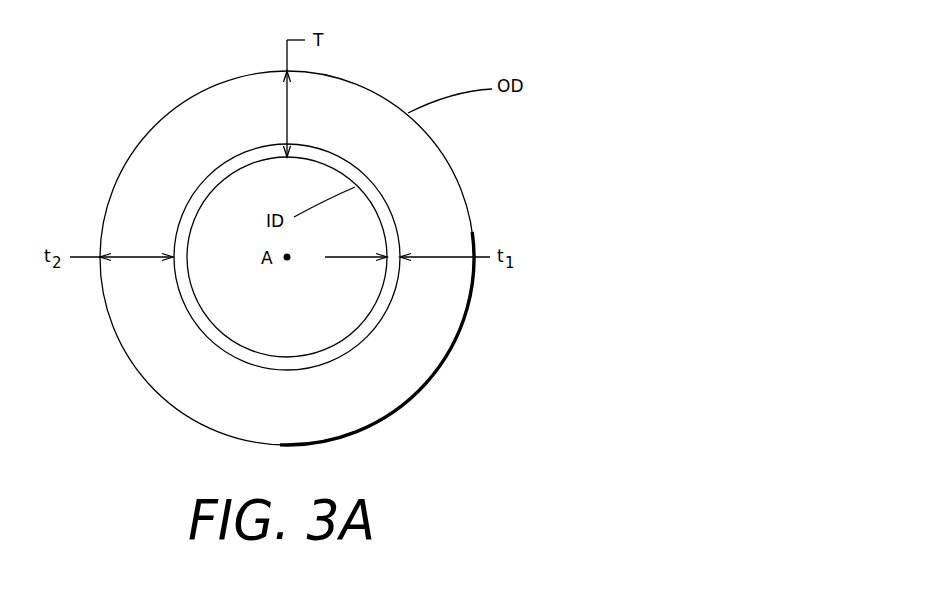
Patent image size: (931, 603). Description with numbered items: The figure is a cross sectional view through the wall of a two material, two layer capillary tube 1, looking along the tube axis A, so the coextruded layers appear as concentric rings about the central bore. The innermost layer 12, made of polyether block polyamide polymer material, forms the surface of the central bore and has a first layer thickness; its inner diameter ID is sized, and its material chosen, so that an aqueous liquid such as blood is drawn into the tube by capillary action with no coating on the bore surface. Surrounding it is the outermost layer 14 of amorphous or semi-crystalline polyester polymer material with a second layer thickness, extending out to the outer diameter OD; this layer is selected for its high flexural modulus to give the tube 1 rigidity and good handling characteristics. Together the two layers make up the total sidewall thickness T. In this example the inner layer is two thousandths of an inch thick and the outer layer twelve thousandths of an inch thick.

The two layer capillary tube 1 is at (336, 261).
The innermost layer 12 is at (210, 183).
The outermost layer 14 is at (399, 348).